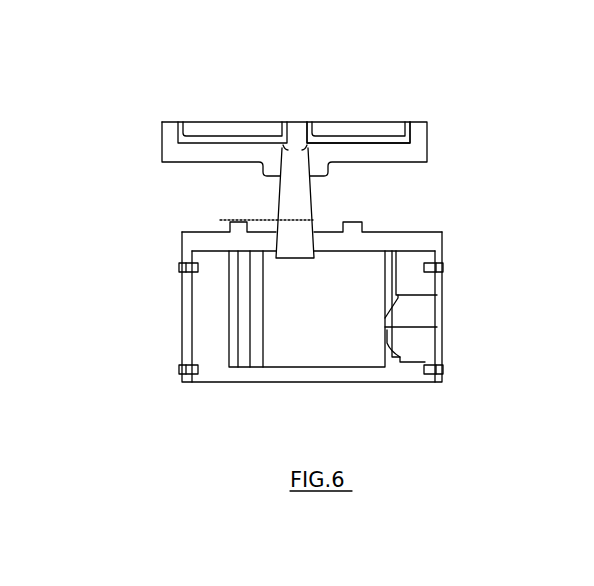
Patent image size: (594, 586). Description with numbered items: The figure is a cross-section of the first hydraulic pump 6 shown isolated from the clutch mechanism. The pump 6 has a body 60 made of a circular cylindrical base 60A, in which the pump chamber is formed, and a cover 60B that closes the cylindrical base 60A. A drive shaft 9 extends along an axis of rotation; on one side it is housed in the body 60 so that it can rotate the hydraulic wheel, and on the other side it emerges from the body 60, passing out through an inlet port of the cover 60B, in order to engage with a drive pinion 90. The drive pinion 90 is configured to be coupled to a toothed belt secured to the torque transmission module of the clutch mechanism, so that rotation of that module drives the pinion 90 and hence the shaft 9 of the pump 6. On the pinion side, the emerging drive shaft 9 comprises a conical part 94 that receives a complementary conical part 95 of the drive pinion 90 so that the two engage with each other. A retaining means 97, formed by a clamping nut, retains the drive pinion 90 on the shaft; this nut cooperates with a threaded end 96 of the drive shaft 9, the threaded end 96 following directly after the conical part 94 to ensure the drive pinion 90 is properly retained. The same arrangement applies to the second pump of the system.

The hydraulic pump 6 is at (100, 97).
The drive shaft 9 is at (297, 233).
The body 60 is at (442, 288).
The circular cylindrical base 60A is at (207, 327).
The cover 60B is at (415, 240).
The drive pinion 90 is at (415, 122).
The conical part 94 is at (306, 150).
The complementary conical part 95 is at (306, 150).
The threaded end 96 is at (283, 127).
The retaining means 97 is at (280, 130).